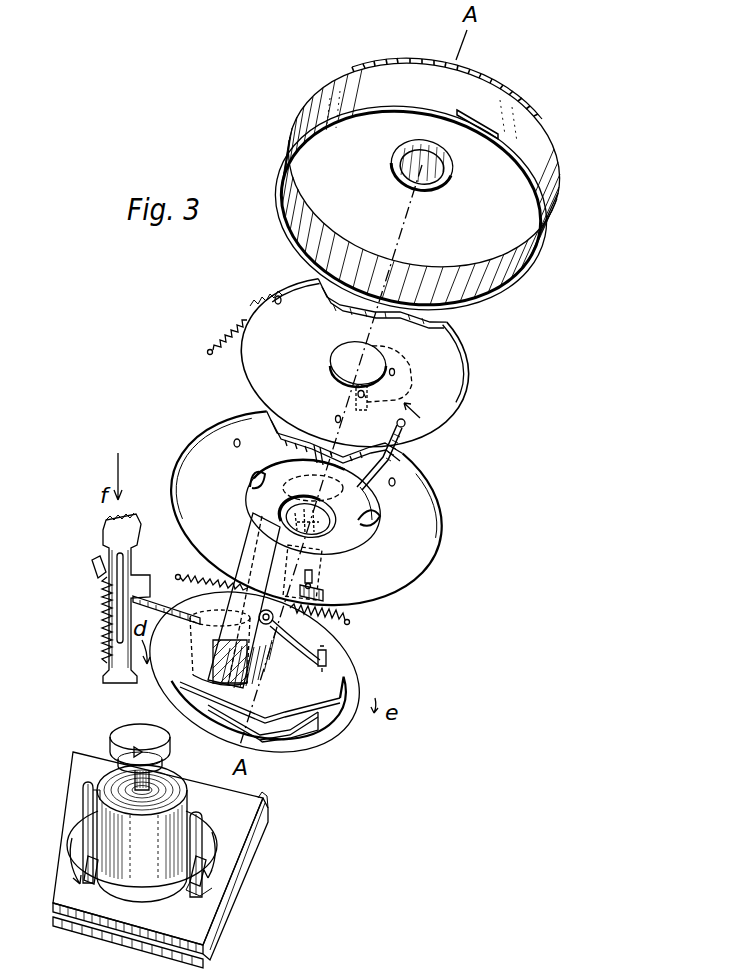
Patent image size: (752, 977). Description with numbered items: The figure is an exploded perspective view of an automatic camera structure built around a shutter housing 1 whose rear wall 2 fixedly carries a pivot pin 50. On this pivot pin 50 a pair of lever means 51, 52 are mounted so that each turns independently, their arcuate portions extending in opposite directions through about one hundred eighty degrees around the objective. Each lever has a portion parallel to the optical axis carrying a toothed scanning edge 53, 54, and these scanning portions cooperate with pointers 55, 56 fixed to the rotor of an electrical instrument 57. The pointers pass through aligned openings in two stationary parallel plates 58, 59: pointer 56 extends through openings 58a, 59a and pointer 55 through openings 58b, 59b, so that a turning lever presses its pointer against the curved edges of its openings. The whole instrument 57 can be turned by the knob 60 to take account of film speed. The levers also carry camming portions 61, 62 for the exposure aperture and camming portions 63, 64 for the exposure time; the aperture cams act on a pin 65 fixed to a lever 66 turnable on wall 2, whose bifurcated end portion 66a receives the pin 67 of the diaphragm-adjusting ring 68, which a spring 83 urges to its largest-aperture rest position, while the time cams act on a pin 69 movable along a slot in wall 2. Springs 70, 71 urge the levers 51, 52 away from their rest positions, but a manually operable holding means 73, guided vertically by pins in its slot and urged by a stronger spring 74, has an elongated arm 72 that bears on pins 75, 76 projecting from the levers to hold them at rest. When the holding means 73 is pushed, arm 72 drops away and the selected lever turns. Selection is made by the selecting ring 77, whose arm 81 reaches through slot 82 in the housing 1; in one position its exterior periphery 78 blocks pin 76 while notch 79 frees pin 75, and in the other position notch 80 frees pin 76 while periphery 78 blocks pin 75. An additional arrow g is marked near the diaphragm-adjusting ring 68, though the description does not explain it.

The shutter housing 1 is at (540, 156).
The slot 82 is at (487, 122).
The diaphragm-adjusting ring 68 is at (455, 362).
The cam slot g is at (400, 382).
The pin 67 is at (341, 416).
The spring 83 is at (233, 338).
The pivot pin 50 is at (313, 442).
The arm 81 is at (377, 467).
The rear wall 2 is at (438, 538).
The selecting ring 77 is at (365, 532).
The exterior periphery 78 is at (288, 458).
The notch 79 is at (250, 481).
The notch 80 is at (381, 516).
The lever 66 is at (290, 585).
The bifurcated end portion 66a is at (303, 553).
The scanning edge 54 is at (250, 675).
The pin 75 is at (185, 606).
The spring 70 is at (207, 580).
The holding means 73 is at (138, 577).
The spring 74 is at (105, 597).
The lever means 52 is at (353, 685).
The lever means 51 is at (178, 676).
The scanning edge 53 is at (197, 673).
The elongated arm 72 is at (293, 660).
The camming portion 63 is at (222, 700).
The camming portion 61 is at (243, 724).
The camming portion 64 is at (312, 728).
The camming portion 62 is at (300, 737).
The pin 76 is at (328, 658).
The pin 65 is at (318, 596).
The spring 71 is at (335, 623).
The pin 69 is at (313, 578).
The plate 58 is at (264, 800).
The opening 58b is at (97, 883).
The opening 58a is at (183, 892).
The plate 59 is at (268, 838).
The opening 59a is at (193, 890).
The opening 59b is at (100, 865).
The pointer 55 is at (83, 812).
The pointer 56 is at (202, 825).
The electrical instrument 57 is at (143, 873).
The knob 60 is at (122, 735).